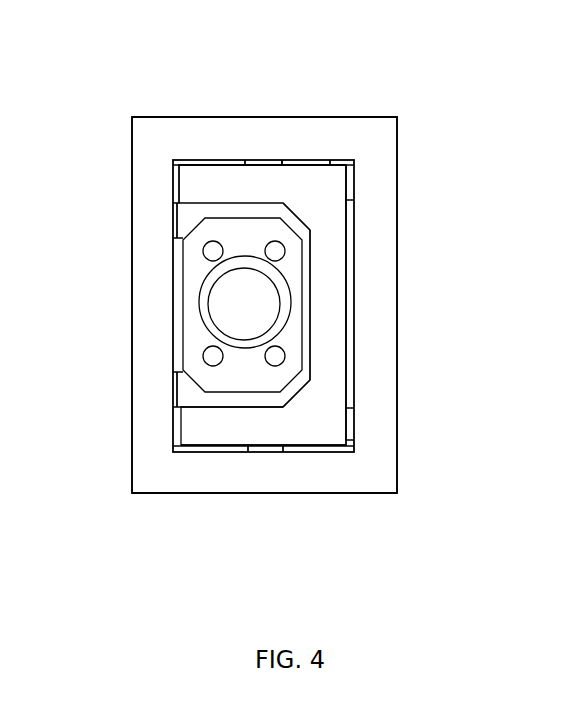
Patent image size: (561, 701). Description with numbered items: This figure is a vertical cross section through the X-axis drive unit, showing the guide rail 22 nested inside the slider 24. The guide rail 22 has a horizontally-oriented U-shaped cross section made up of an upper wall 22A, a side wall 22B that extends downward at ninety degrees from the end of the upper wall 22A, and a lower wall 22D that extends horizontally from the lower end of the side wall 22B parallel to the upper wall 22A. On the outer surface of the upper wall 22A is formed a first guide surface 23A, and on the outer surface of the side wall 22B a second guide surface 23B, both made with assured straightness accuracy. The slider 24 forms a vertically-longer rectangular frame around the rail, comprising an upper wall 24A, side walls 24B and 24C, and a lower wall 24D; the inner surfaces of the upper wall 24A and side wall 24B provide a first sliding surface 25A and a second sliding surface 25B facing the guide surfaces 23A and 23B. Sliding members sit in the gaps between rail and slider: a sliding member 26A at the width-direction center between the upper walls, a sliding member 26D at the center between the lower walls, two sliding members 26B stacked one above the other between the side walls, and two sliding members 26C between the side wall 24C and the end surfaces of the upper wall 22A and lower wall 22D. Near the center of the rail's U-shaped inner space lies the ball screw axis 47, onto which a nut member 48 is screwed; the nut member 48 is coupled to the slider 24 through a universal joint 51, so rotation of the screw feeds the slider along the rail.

The guide rail 22 is at (335, 303).
The upper wall 22A is at (203, 180).
The side wall 22B is at (332, 263).
The lower wall 22D is at (210, 437).
The first guide surface 23A is at (330, 157).
The second guide surface 23B is at (355, 352).
The slider 24 is at (397, 383).
The upper wall 24A is at (218, 125).
The side wall 24B is at (387, 185).
The side wall 24C is at (133, 228).
The lower wall 24D is at (342, 488).
The first sliding surface 25A is at (305, 157).
The second sliding surface 25B is at (350, 228).
The sliding member 26A is at (258, 150).
The sliding member 26B is at (358, 183).
The sliding member 26C is at (175, 181).
The sliding member 26D is at (268, 450).
The ball screw axis 47 is at (225, 317).
The nut member 48 is at (205, 285).
The universal joint 51 is at (190, 363).